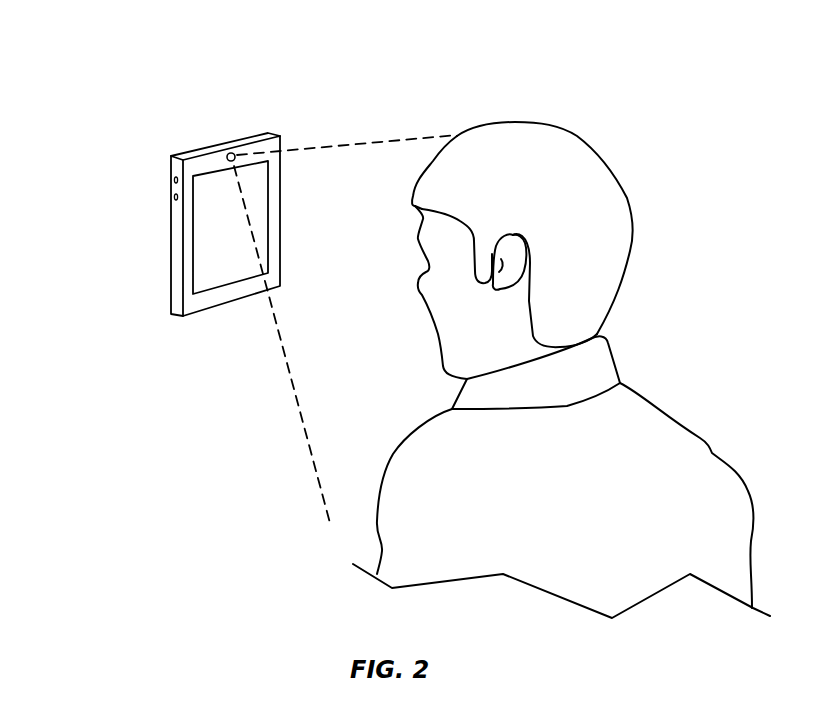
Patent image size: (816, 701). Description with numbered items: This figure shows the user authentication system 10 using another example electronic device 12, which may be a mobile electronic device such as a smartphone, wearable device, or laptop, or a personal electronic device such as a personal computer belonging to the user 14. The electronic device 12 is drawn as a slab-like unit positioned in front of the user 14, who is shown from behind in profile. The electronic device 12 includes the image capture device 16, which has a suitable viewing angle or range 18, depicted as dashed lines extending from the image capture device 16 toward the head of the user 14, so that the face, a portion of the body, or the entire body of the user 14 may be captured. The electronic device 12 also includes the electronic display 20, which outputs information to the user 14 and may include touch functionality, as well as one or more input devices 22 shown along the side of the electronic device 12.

The user authentication system 10 is at (457, 73).
The electronic device 12 is at (223, 142).
The user 14 is at (597, 150).
The image capture device 16 is at (234, 152).
The viewing angle or range 18 is at (397, 138).
The electronic display 20 is at (208, 256).
The input devices 22 is at (173, 200).